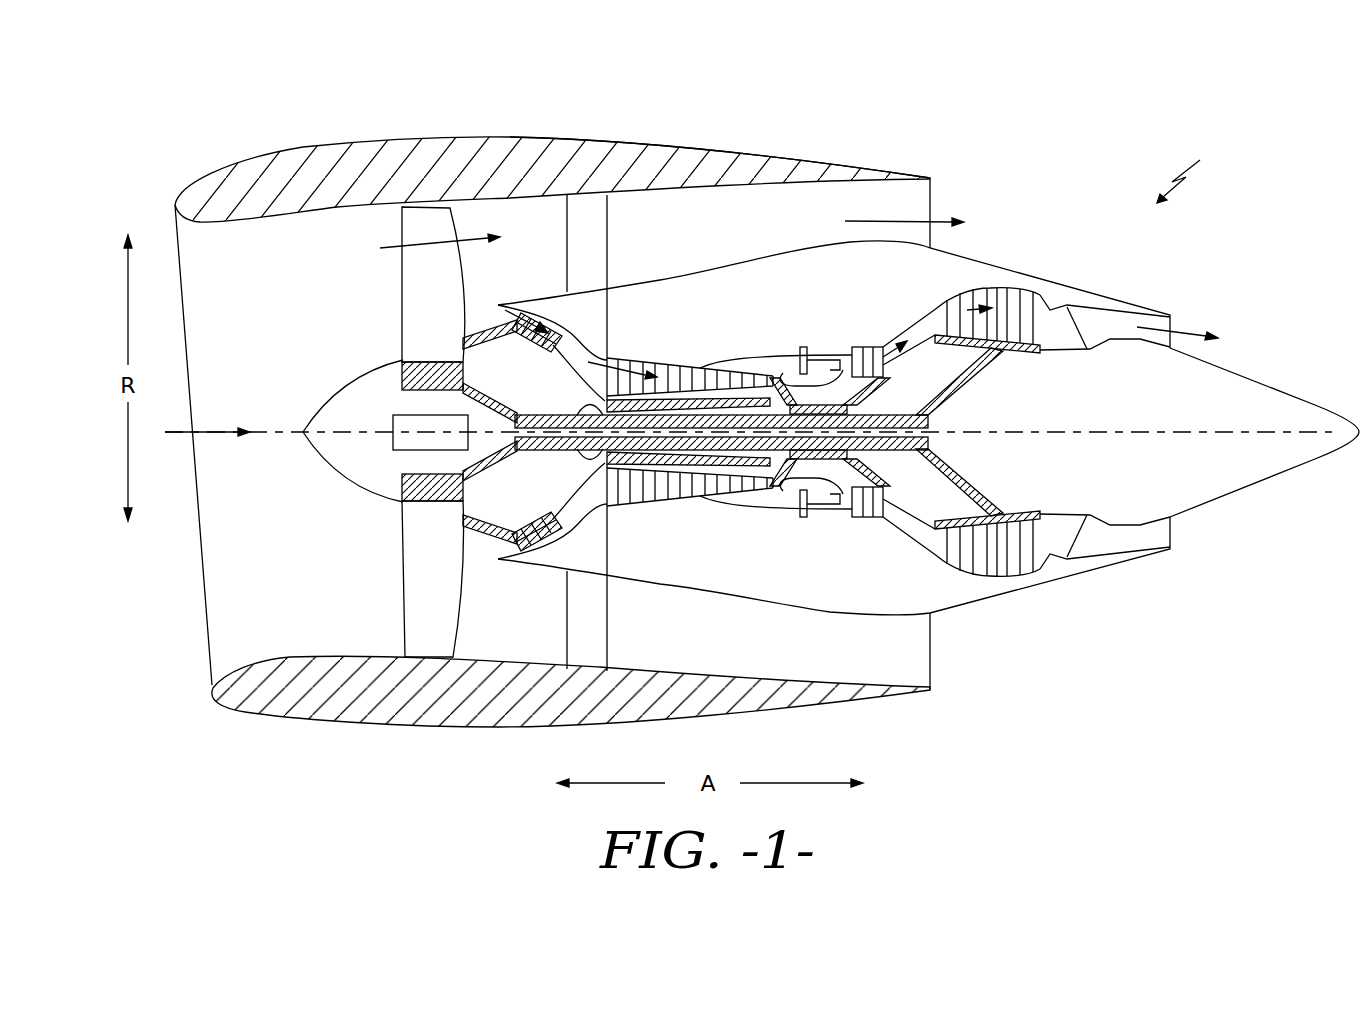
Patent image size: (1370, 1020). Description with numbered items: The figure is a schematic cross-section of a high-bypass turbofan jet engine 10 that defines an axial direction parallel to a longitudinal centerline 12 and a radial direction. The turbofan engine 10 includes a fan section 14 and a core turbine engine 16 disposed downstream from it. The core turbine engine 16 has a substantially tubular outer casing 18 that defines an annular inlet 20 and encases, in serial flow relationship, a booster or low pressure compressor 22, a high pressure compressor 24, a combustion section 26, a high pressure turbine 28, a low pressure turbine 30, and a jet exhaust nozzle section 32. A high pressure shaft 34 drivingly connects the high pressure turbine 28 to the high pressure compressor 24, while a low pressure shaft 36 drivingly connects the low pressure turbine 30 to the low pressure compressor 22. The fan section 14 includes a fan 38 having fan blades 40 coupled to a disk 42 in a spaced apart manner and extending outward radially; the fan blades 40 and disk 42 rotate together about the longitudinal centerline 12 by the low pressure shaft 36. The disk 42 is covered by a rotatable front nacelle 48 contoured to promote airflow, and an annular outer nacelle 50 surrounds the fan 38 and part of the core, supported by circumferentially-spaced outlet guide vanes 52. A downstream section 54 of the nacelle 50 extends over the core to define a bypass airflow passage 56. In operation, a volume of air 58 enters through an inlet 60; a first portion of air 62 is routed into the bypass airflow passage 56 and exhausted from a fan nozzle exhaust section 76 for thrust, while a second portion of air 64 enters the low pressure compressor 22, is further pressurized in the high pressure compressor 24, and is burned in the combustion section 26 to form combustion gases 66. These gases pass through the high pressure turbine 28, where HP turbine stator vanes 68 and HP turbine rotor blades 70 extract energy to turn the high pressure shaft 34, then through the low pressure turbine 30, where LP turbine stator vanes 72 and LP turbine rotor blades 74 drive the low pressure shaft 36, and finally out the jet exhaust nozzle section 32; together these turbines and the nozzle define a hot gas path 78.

The turbofan jet engine 10 is at (1194, 170).
The longitudinal centerline 12 is at (1093, 430).
The fan section 14 is at (477, 112).
The core turbine engine 16 is at (768, 302).
The outer casing 18 is at (785, 600).
The annular inlet 20 is at (498, 547).
The low pressure compressor 22 is at (570, 515).
The high pressure compressor 24 is at (633, 505).
The combustion section 26 is at (813, 507).
The high pressure turbine 28 is at (861, 518).
The low pressure turbine 30 is at (984, 577).
The jet exhaust nozzle section 32 is at (1173, 322).
The high pressure shaft 34 is at (858, 392).
The low pressure shaft 36 is at (568, 416).
The fan 38 is at (377, 287).
The fan blades 40 is at (400, 607).
The disk 42 is at (400, 376).
The rotatable front nacelle 48 is at (330, 407).
The outer nacelle 50 is at (463, 727).
The outlet guide vanes 52 is at (608, 213).
The downstream section 54 is at (760, 144).
The bypass airflow passage 56 is at (713, 236).
The volume of air 58 is at (203, 425).
The inlet 60 is at (207, 647).
The first portion of air 62 is at (413, 243).
The second portion of air 64 is at (480, 313).
The combustion gases 66 is at (867, 350).
The HP turbine stator vanes 68 is at (855, 517).
The HP turbine rotor blades 70 is at (868, 517).
The LP turbine stator vanes 72 is at (940, 545).
The LP turbine rotor blades 74 is at (950, 560).
The fan nozzle exhaust section 76 is at (932, 202).
The hot gas path 78 is at (914, 312).